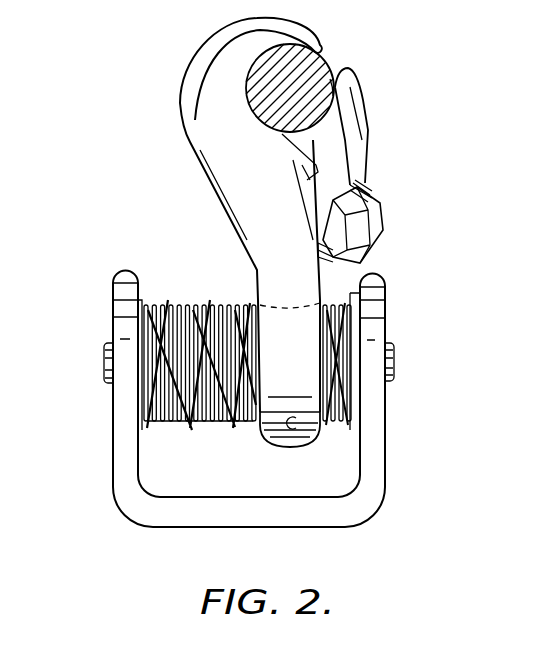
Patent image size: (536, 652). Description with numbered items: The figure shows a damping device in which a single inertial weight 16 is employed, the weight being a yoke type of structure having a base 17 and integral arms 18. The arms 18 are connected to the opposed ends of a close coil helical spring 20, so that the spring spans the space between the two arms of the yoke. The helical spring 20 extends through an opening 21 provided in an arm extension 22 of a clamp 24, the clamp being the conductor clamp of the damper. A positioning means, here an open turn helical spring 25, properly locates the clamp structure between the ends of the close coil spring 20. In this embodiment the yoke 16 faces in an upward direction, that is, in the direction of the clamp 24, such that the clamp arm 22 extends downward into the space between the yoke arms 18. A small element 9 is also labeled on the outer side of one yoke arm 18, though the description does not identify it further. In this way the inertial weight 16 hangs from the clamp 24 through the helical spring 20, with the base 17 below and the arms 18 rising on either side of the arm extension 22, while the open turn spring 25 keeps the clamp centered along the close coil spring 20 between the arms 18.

The bolt head 9 is at (105, 366).
The inertial weight 16 is at (363, 523).
The base 17 is at (215, 513).
The arms 18 is at (125, 428).
The close coil helical spring 20 is at (185, 297).
The opening 21 is at (294, 424).
The arm extension 22 is at (280, 267).
The clamp 24 is at (193, 60).
The open turn helical spring 25 is at (193, 433).